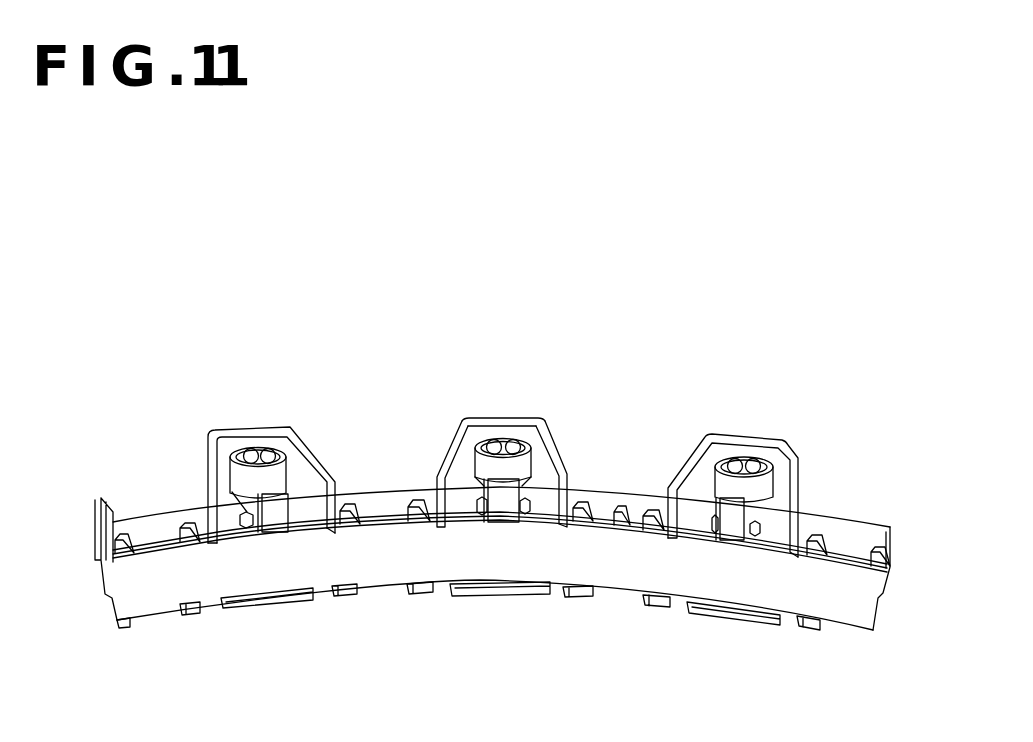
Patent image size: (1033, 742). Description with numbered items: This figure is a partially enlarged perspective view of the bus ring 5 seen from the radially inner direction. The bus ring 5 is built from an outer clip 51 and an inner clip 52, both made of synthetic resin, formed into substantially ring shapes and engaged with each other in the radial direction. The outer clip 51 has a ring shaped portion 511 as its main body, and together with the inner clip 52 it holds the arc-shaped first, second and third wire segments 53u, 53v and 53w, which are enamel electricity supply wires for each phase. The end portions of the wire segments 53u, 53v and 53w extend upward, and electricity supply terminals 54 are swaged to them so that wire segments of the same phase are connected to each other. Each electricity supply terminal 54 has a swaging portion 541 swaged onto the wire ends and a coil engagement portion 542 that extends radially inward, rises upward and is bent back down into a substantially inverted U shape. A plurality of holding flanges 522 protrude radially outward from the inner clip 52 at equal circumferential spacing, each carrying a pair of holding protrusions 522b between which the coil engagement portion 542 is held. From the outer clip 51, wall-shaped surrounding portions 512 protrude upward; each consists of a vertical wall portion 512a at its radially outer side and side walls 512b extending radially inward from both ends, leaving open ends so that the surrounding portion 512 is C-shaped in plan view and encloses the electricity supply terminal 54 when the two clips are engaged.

The bus ring 5 is at (815, 273).
The outer clip 51 is at (161, 519).
The ring shaped portion 511 is at (367, 497).
The surrounding portion 512 is at (240, 432).
The vertical wall portion 512a is at (498, 425).
The side walls 512b is at (447, 450).
The inner clip 52 is at (177, 590).
The holding flanges 522 is at (307, 523).
The holding protrusions 522b is at (520, 522).
The first wire segments 53u is at (260, 455).
The third wire segments 53w is at (494, 445).
The second wire segments 53v is at (753, 462).
The electricity supply terminals 54 is at (723, 488).
The swaging portion 541 is at (522, 465).
The coil engagement portion 542 is at (736, 532).